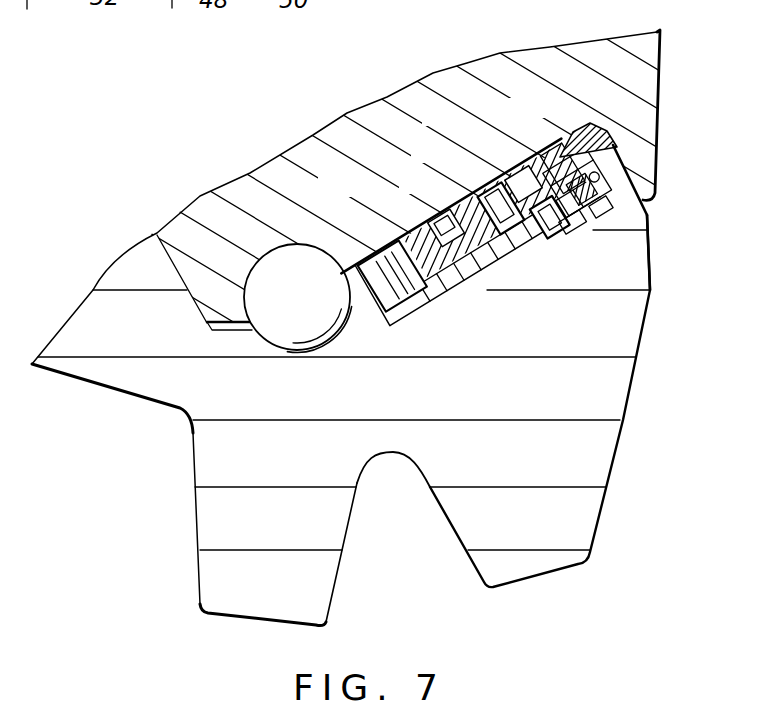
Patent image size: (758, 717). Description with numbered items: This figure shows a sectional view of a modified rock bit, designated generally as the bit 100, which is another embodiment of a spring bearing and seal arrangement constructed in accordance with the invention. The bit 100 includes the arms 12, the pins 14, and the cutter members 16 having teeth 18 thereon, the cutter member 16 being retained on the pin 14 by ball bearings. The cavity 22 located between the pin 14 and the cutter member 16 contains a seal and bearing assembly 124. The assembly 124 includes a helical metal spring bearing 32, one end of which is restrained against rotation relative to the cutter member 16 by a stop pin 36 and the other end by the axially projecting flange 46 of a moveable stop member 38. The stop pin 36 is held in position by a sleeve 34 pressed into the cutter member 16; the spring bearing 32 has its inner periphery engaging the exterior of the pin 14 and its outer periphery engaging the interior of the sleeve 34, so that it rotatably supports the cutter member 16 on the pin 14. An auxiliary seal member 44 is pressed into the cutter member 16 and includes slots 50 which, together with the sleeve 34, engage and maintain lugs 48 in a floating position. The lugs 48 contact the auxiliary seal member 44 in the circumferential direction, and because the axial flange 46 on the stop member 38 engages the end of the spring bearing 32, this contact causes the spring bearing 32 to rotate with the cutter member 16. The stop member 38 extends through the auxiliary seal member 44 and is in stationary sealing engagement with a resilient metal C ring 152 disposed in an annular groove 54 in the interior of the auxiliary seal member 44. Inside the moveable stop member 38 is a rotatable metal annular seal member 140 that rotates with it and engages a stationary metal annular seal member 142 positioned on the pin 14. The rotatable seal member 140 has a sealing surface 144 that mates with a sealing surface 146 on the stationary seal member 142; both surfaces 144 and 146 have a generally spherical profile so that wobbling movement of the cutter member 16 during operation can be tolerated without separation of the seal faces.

The bit 100 is at (218, 148).
The arms 12 is at (640, 63).
The pins 14 is at (196, 212).
The cutter members 16 is at (84, 315).
The teeth 18 is at (228, 527).
The cavity 22 is at (440, 215).
The helical metal spring bearing 32 is at (408, 207).
The sleeve 34 is at (433, 290).
The stop pin 36 is at (374, 300).
The moveable stop member 38 is at (540, 170).
The auxiliary seal member 44 is at (603, 210).
The axially projecting flange 46 is at (527, 183).
The lugs 48 is at (557, 220).
The slots 50 is at (573, 228).
The annular groove 54 is at (610, 190).
The seal and bearing assembly 124 is at (475, 284).
The rotatable annular seal member 140 is at (503, 155).
The stationary annular seal member 142 is at (577, 157).
The sealing surface 144 is at (607, 150).
The sealing surface 146 is at (552, 165).
The resilient metal C ring 152 is at (597, 207).